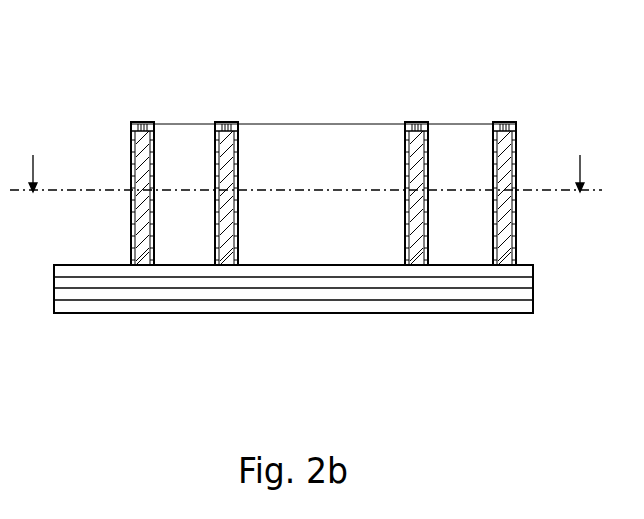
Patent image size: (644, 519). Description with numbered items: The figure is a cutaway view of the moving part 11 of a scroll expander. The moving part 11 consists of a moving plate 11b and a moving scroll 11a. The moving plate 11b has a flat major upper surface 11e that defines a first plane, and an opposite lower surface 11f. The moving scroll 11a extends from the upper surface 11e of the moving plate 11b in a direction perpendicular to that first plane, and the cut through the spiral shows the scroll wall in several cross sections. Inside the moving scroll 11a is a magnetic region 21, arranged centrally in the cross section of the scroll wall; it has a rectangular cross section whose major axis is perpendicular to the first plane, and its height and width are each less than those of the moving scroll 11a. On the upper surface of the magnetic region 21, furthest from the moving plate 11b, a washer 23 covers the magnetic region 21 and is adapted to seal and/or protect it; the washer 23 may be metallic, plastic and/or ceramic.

The moving part 11 is at (63, 44).
The moving scroll 11a is at (516, 228).
The moving plate 11b is at (528, 286).
The upper surface 11e is at (86, 258).
The lower surface 11f is at (87, 320).
The magnetic region 21 is at (154, 173).
The washer 23 is at (140, 122).